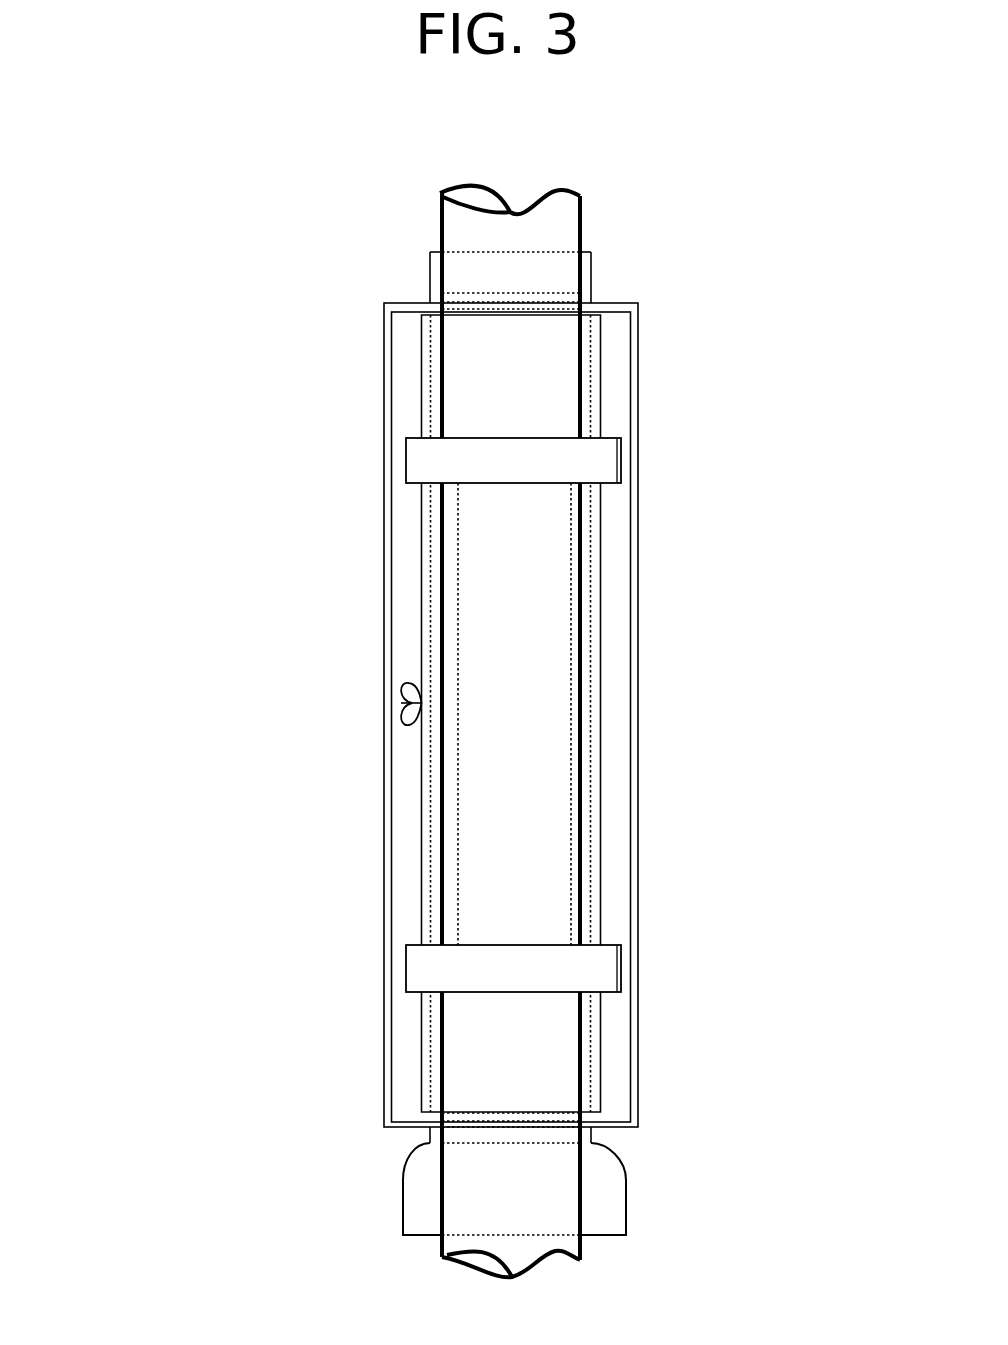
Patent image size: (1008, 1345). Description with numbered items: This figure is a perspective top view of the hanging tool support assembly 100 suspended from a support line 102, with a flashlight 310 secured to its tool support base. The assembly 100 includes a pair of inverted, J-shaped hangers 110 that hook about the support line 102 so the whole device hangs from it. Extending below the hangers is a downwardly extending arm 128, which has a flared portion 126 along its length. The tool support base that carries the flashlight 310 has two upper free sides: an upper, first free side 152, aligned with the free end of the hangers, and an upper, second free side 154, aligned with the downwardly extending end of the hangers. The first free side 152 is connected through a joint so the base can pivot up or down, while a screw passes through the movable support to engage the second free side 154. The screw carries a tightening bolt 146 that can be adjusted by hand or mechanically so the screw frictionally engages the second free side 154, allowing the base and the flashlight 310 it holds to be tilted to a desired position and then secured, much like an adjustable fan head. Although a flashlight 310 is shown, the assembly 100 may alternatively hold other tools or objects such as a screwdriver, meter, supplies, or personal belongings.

The hanging tool support assembly 100 is at (185, 267).
The support line 102 is at (548, 718).
The inverted J-shaped hangers 110 is at (497, 458).
The flared portion 126 is at (600, 824).
The downwardly extending arm 128 is at (423, 825).
The tightening bolt 146 is at (403, 703).
The upper first free side 152 is at (632, 790).
The upper second free side 154 is at (393, 480).
The flashlight 310 is at (430, 277).